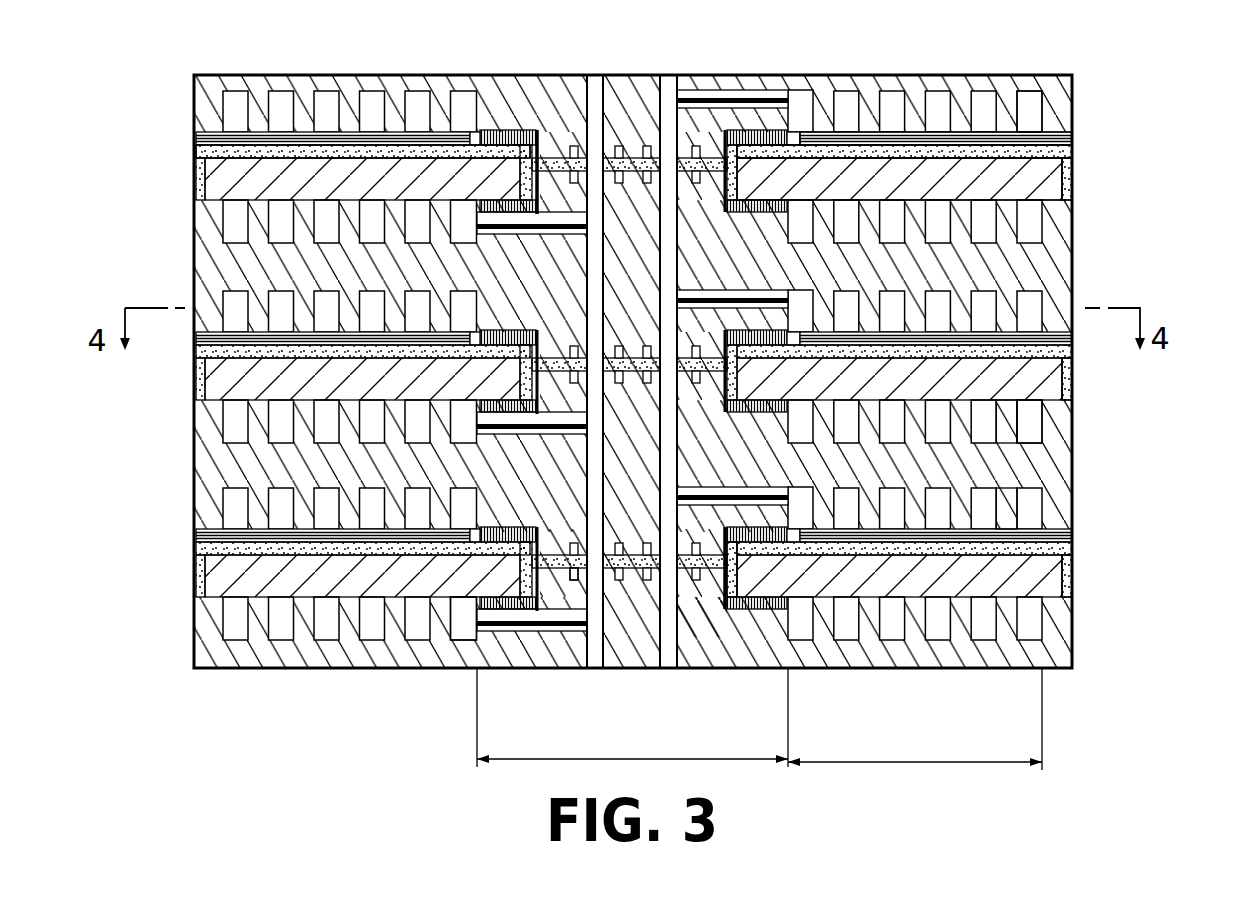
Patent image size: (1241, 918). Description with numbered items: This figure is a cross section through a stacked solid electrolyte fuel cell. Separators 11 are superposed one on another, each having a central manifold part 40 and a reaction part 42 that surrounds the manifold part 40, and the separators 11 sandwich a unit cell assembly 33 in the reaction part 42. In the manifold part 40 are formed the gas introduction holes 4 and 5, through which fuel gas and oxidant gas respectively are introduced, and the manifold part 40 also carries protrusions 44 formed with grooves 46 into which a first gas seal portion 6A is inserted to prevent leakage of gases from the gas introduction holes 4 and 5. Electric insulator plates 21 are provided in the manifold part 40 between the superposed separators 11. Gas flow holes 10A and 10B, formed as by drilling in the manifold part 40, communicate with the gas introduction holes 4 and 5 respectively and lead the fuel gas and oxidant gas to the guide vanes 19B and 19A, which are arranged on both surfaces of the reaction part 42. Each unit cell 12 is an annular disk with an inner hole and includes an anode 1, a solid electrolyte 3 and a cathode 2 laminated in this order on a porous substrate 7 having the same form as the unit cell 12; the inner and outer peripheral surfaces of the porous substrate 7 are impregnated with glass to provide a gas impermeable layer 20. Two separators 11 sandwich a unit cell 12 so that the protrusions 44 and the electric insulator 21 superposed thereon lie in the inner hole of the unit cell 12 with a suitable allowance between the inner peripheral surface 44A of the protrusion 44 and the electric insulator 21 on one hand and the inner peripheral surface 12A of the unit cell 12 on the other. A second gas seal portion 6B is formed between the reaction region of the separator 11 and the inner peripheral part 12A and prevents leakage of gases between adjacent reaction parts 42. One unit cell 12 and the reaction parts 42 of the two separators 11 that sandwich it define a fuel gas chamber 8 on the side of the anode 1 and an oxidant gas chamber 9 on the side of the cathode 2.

The anode 1 is at (1072, 177).
The cathode 2 is at (1072, 140).
The solid electrolyte 3 is at (946, 147).
The gas introduction hole 4 is at (594, 650).
The gas introduction hole 5 is at (670, 82).
The first gas seal portion 6A is at (573, 578).
The second gas seal portion 6B is at (475, 612).
The porous substrate 7 is at (1047, 187).
The fuel gas chamber 8 is at (1030, 430).
The oxidant gas chamber 9 is at (1030, 100).
The gas flow hole 10A is at (537, 230).
The gas flow hole 10B is at (772, 100).
The separator 11 is at (1058, 277).
The unit cell 12 is at (1160, 93).
The inner peripheral part 12A is at (735, 607).
The guide vanes 19A is at (1007, 507).
The guide vanes 19B is at (1007, 430).
The gas impermeable layer 20 is at (1065, 575).
The electric insulator plate 21 is at (550, 156).
The unit cell assembly 33 is at (183, 132).
The manifold part 40 is at (632, 729).
The reaction part 42 is at (915, 731).
The protrusion 44 is at (698, 622).
The inner peripheral surface 44A is at (730, 607).
The groove 46 is at (622, 135).